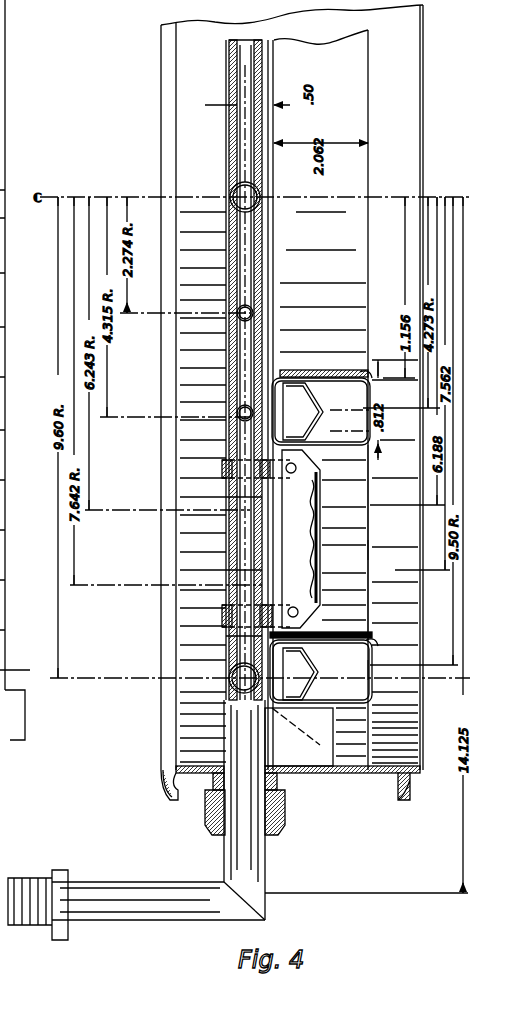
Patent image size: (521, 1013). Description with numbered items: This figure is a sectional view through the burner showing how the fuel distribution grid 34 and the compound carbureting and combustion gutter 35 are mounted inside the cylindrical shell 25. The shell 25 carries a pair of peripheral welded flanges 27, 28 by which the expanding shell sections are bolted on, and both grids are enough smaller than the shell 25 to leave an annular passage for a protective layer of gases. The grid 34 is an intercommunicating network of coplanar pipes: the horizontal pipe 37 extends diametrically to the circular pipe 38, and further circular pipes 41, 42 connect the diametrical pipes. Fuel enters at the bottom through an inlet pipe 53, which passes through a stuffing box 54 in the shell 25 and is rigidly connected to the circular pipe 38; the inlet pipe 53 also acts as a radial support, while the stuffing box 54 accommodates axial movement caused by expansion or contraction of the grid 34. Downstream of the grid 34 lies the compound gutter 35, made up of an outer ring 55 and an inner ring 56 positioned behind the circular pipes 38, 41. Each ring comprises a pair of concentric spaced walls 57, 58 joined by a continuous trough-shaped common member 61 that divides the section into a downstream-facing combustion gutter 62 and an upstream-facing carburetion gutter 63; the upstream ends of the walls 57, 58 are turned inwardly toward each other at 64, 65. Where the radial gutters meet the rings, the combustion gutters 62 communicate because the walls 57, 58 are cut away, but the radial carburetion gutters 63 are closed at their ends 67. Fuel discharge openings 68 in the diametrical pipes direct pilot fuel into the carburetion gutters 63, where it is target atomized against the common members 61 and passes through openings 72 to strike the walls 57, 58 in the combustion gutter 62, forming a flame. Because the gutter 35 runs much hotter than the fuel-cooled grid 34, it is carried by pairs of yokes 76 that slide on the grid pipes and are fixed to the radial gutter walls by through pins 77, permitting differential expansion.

The cylindrical shell 25 is at (332, 774).
The peripheral welded flange 27 is at (160, 795).
The peripheral welded flange 28 is at (12, 735).
The fuel distribution grid 34 is at (228, 262).
The compound carbureting and combustion gutter 35 is at (378, 300).
The horizontal pipe 37 is at (226, 383).
The circular pipe 38 is at (230, 672).
The circular pipe 41 is at (237, 413).
The circular pipe 42 is at (237, 316).
The inlet pipe 53 is at (165, 876).
The stuffing box 54 is at (300, 822).
The outer ring 55 is at (346, 630).
The inner ring 56 is at (322, 378).
The wall 57 is at (345, 450).
The wall 58 is at (366, 376).
The common member 61 is at (312, 662).
The combustion gutter 62 is at (372, 562).
The carburetion gutter 63 is at (300, 372).
The inturned end 64 is at (265, 716).
The inturned end 65 is at (230, 637).
The closed end 67 is at (318, 487).
The fuel discharge opening 68 is at (228, 498).
The opening 72 is at (300, 428).
The yoke 76 is at (222, 468).
The through pin 77 is at (297, 466).